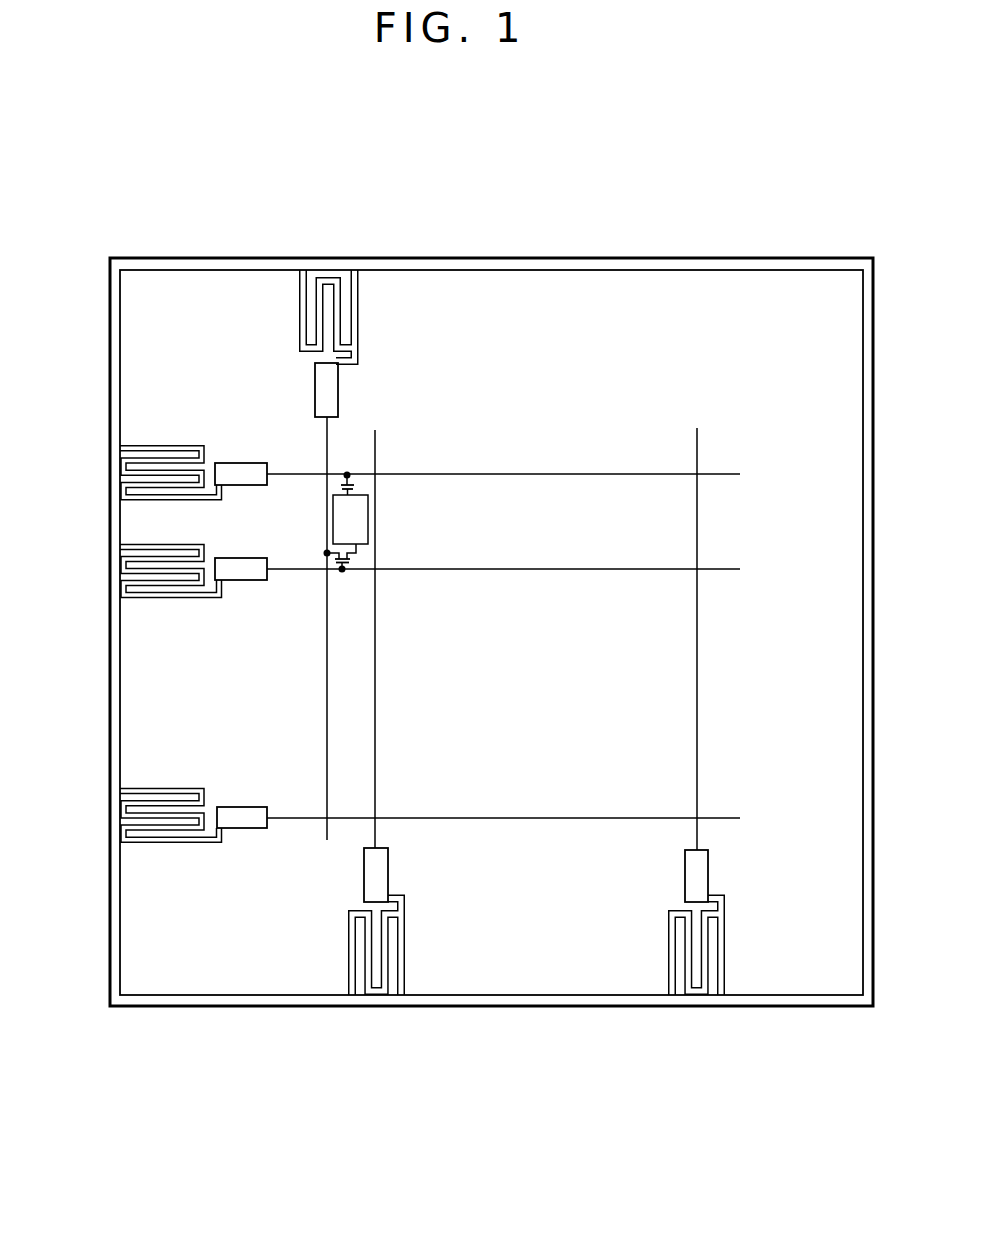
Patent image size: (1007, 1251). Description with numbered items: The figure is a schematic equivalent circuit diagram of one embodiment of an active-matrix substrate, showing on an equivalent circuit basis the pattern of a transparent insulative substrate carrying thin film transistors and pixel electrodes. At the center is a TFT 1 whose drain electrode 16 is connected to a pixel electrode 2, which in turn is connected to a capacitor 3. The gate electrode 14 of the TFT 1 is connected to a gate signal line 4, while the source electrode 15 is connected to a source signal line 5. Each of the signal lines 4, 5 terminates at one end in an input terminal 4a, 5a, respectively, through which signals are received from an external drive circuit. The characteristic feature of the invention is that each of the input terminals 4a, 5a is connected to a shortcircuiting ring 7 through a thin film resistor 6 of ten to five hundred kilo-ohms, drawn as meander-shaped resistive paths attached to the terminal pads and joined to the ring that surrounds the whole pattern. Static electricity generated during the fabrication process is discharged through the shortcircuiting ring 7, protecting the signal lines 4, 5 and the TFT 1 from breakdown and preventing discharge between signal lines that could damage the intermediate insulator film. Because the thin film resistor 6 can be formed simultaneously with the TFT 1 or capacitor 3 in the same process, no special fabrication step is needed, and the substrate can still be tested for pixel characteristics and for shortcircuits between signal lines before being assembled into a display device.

The TFT 1 is at (362, 560).
The pixel electrode 2 is at (357, 512).
The capacitor 3 is at (358, 487).
The gate signal line 4 is at (597, 472).
The input terminal 4a is at (240, 822).
The source signal line 5 is at (327, 775).
The input terminal 5a is at (318, 390).
The thin film resistor 6 is at (130, 818).
The shortcircuiting ring 7 is at (813, 263).
The gate electrode 14 is at (336, 563).
The source electrode 15 is at (325, 553).
The drain electrode 16 is at (342, 573).